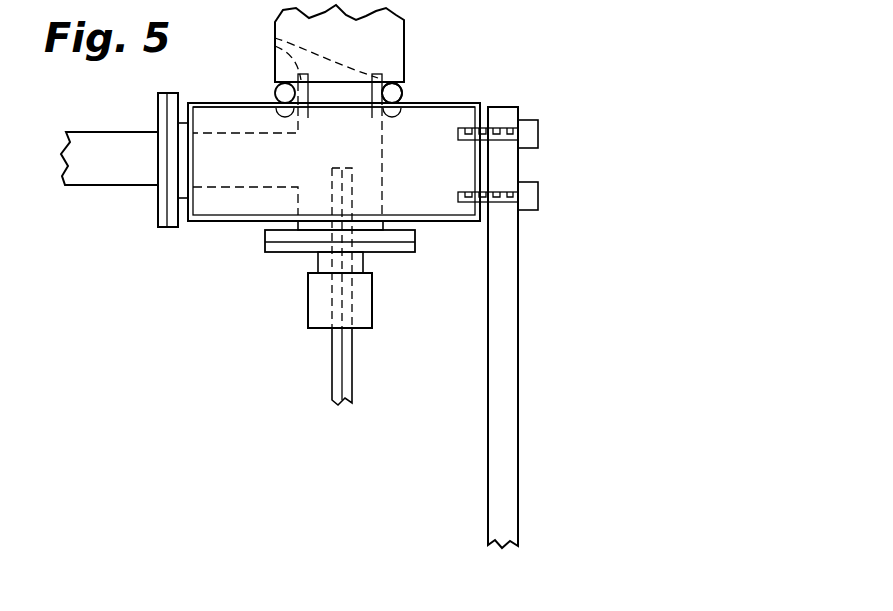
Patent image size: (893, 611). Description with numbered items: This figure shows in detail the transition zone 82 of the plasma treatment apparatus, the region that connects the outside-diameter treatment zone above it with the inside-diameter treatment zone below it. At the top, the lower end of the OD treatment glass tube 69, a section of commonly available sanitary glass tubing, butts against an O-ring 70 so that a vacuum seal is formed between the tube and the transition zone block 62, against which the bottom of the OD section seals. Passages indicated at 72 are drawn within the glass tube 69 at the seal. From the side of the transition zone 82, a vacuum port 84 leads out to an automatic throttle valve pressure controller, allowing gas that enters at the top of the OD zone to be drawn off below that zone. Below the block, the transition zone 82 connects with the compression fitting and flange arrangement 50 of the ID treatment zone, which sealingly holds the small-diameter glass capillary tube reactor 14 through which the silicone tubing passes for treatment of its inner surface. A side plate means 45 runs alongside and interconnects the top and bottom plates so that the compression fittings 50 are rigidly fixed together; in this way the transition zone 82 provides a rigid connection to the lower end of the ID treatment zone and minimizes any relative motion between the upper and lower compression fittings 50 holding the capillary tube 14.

The glass capillary tube reactor 14 is at (352, 372).
The side plate means 45 is at (521, 330).
The compression fitting and flange arrangement 50 is at (282, 258).
The transition zone block 62 is at (462, 100).
The glass tubing 69 is at (405, 42).
The O-ring 70 is at (402, 90).
The internal passage 72 is at (275, 38).
The transition zone 82 is at (222, 233).
The vacuum port 84 is at (47, 150).